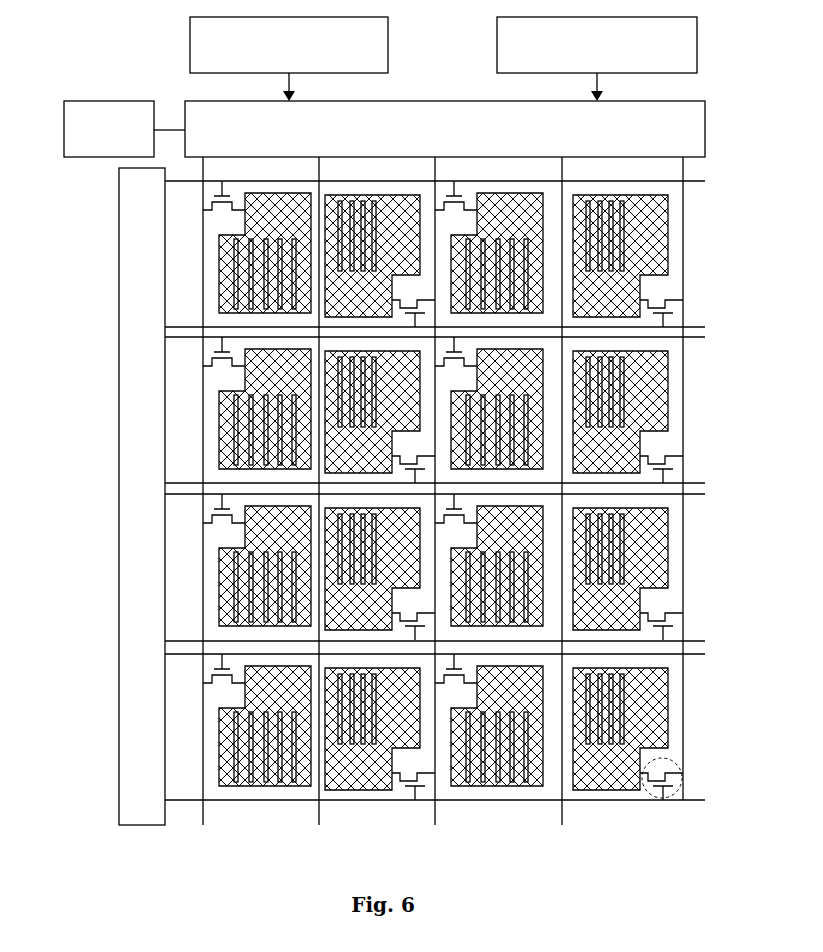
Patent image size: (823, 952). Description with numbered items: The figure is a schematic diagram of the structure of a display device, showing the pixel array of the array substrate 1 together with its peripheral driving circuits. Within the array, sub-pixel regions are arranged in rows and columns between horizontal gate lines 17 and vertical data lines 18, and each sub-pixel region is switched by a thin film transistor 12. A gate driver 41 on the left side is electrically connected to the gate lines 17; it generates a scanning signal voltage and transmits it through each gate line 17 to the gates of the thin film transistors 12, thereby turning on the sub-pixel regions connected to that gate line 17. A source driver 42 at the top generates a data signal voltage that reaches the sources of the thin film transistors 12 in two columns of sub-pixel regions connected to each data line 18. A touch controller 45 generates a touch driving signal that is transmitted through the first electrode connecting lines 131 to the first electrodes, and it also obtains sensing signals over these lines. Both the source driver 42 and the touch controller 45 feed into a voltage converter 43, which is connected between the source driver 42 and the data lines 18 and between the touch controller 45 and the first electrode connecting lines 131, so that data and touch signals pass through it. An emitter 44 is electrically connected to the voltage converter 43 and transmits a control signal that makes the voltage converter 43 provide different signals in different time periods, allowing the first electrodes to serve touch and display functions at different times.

The array substrate 1 is at (471, 506).
The thin film transistor 12 is at (690, 776).
The gate line 17 is at (696, 323).
The data line 18 is at (436, 818).
The first electrode connecting line 131 is at (562, 815).
The gate driver 41 is at (113, 335).
The source driver 42 is at (380, 34).
The voltage converter 43 is at (682, 128).
The emitter 44 is at (62, 132).
The touch controller 45 is at (700, 34).